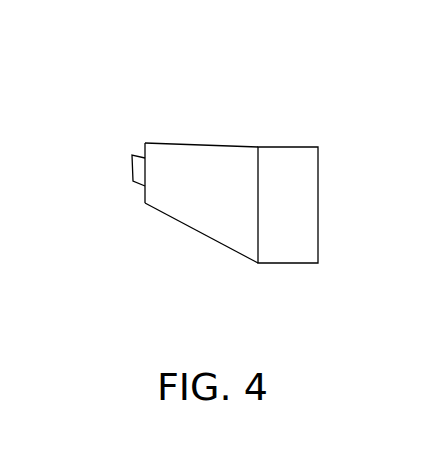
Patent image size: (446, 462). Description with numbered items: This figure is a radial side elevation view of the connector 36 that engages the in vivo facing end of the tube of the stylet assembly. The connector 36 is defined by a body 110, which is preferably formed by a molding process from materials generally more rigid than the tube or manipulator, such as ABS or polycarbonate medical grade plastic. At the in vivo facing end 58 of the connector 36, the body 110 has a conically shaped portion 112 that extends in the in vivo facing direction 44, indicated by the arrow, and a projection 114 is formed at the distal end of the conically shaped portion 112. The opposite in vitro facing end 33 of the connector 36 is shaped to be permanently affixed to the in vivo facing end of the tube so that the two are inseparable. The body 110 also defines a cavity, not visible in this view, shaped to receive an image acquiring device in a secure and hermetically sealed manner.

The connector 36 is at (207, 157).
The conically shaped portion 112 is at (155, 132).
The body 110 is at (235, 230).
The in vitro facing end 33 is at (322, 130).
The projection 114 is at (132, 176).
The in vivo facing end 58 is at (138, 98).
The in vivo facing direction 44 is at (107, 110).